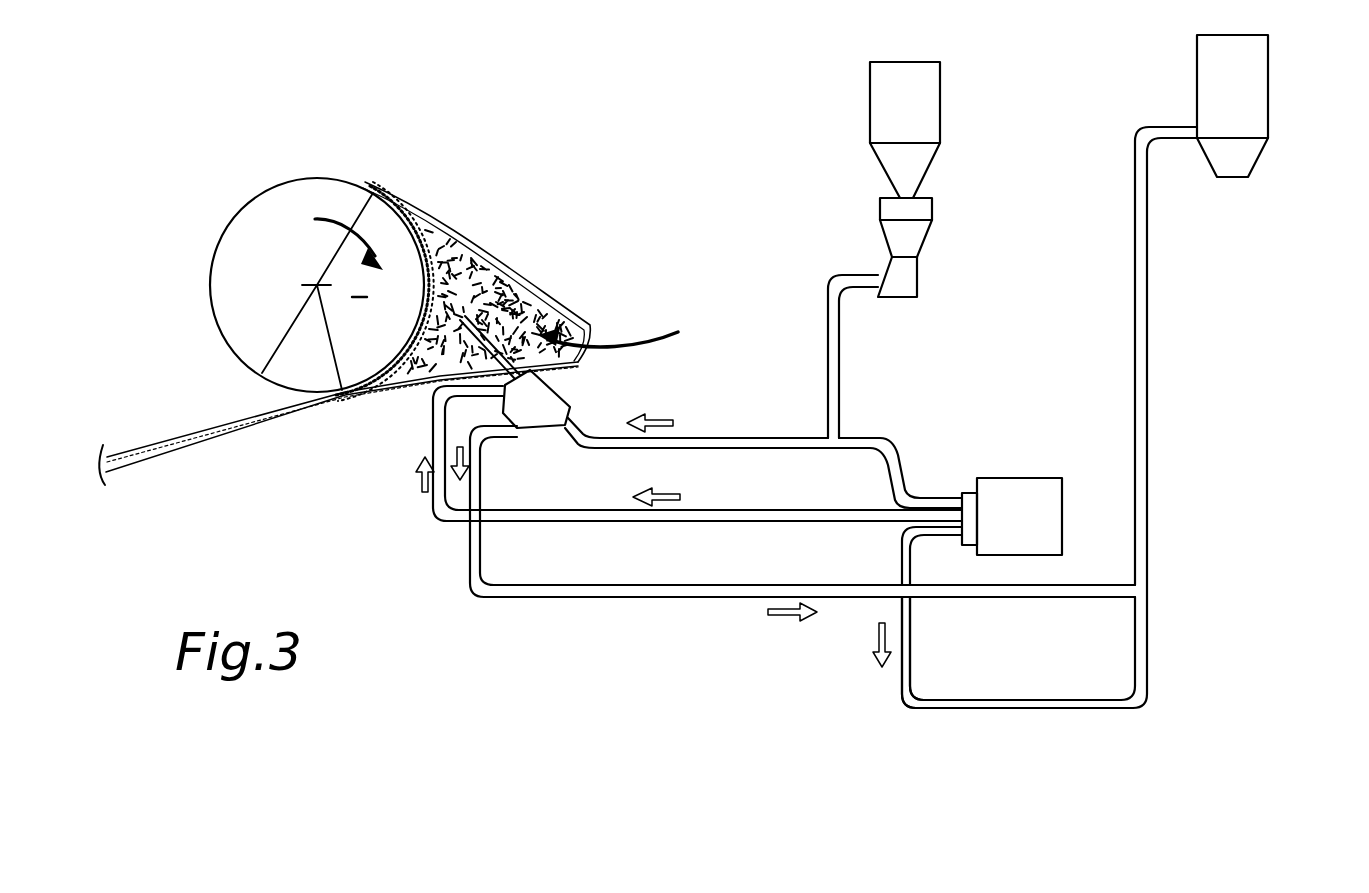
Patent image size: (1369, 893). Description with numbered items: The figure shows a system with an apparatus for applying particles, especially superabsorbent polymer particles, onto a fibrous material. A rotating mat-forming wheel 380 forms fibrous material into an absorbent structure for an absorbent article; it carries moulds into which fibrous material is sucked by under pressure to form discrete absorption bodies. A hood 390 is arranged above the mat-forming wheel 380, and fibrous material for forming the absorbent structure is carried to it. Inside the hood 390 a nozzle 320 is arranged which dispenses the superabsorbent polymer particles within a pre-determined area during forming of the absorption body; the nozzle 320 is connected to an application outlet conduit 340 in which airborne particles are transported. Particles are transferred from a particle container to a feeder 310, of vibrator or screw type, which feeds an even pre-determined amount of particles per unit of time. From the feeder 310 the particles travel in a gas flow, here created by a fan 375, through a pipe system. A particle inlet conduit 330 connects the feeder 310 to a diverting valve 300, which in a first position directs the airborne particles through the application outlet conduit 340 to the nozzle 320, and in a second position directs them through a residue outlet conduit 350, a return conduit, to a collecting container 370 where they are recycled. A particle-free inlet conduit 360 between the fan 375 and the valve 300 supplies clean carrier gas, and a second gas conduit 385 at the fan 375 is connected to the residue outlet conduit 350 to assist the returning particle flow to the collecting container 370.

The diverting valve 300 is at (530, 400).
The feeder 310 is at (918, 90).
The nozzle 320 is at (490, 280).
The particle inlet conduit 330 is at (775, 435).
The application outlet conduit 340 is at (546, 333).
The residue outlet conduit 350 is at (478, 447).
The particle-free inlet conduit 360 is at (432, 433).
The collecting container 370 is at (1247, 72).
The fan 375 is at (1012, 492).
The mat-forming wheel 380 is at (240, 308).
The second gas conduit 385 is at (948, 703).
The hood 390 is at (498, 263).